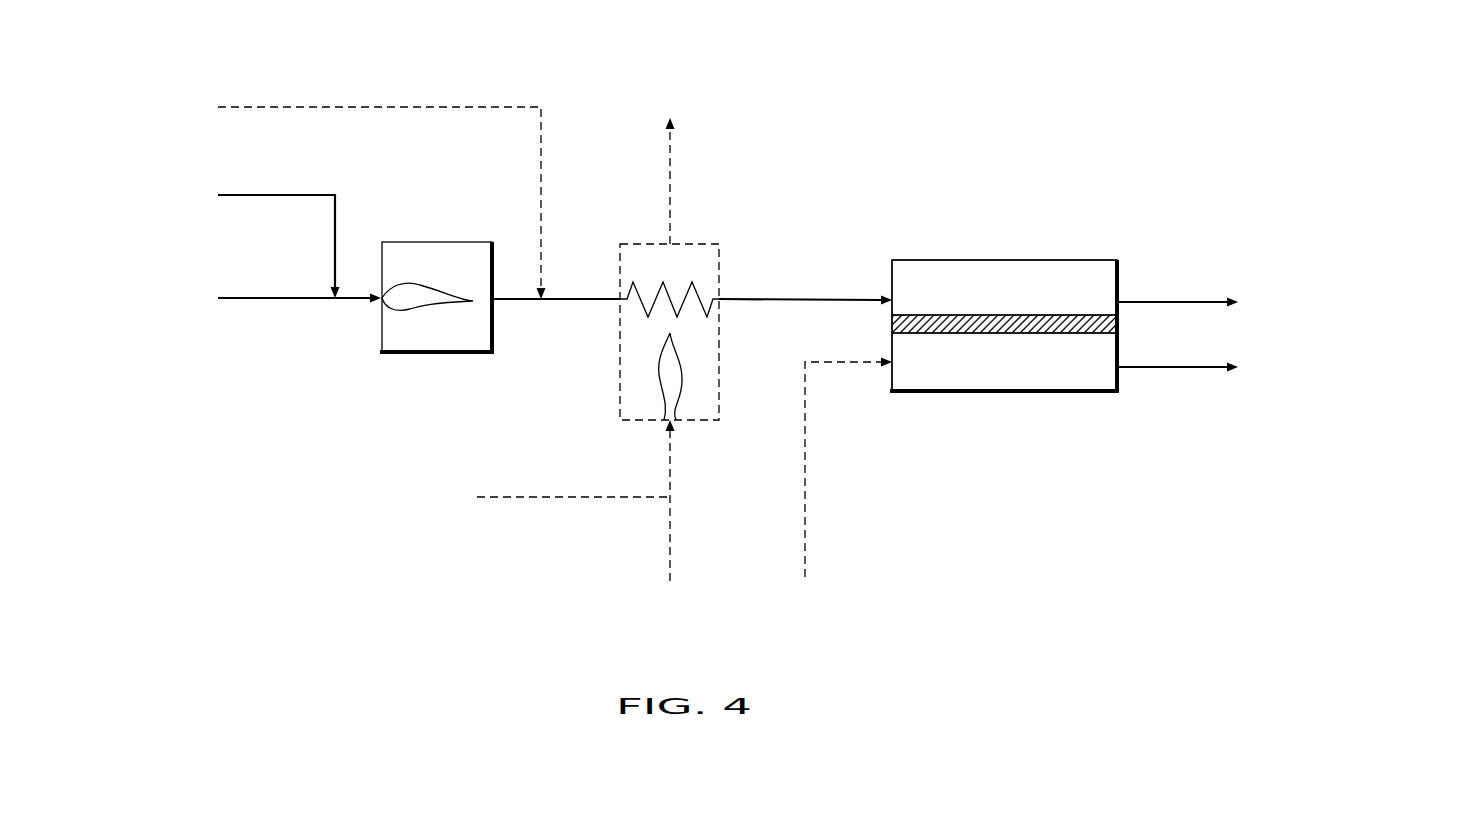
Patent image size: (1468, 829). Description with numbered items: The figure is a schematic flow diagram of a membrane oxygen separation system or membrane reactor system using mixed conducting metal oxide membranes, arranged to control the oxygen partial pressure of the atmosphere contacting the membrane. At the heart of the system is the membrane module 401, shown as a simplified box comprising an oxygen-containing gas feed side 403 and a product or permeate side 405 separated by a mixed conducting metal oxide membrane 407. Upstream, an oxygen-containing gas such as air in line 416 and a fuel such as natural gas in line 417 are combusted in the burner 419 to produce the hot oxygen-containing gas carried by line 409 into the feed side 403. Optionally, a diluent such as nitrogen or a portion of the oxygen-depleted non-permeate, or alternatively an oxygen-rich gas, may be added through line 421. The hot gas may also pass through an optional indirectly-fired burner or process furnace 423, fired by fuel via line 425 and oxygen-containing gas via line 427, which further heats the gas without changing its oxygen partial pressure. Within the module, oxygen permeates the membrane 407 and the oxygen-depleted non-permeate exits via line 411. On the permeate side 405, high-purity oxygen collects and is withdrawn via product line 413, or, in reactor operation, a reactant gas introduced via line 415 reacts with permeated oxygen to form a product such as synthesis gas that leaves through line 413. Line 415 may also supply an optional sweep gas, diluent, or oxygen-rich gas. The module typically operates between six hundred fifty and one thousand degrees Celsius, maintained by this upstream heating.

The membrane module 401 is at (968, 408).
The oxygen-containing gas feed side 403 is at (1063, 287).
The product or permeate side 405 is at (940, 363).
The mixed conducting metal oxide membrane 407 is at (1025, 322).
The hot oxygen-containing gas line 409 is at (830, 299).
The non-permeate gas line 411 is at (1143, 302).
The product line 413 is at (1147, 367).
The sweep or reactant gas line 415 is at (805, 540).
The oxygen-containing gas line 416 is at (292, 298).
The fuel line 417 is at (313, 195).
The burner 419 is at (460, 242).
The diluent line 421 is at (430, 107).
The indirectly-fired burner or process furnace 423 is at (620, 348).
The furnace fuel line 425 is at (670, 560).
The furnace oxygen-containing gas line 427 is at (584, 497).